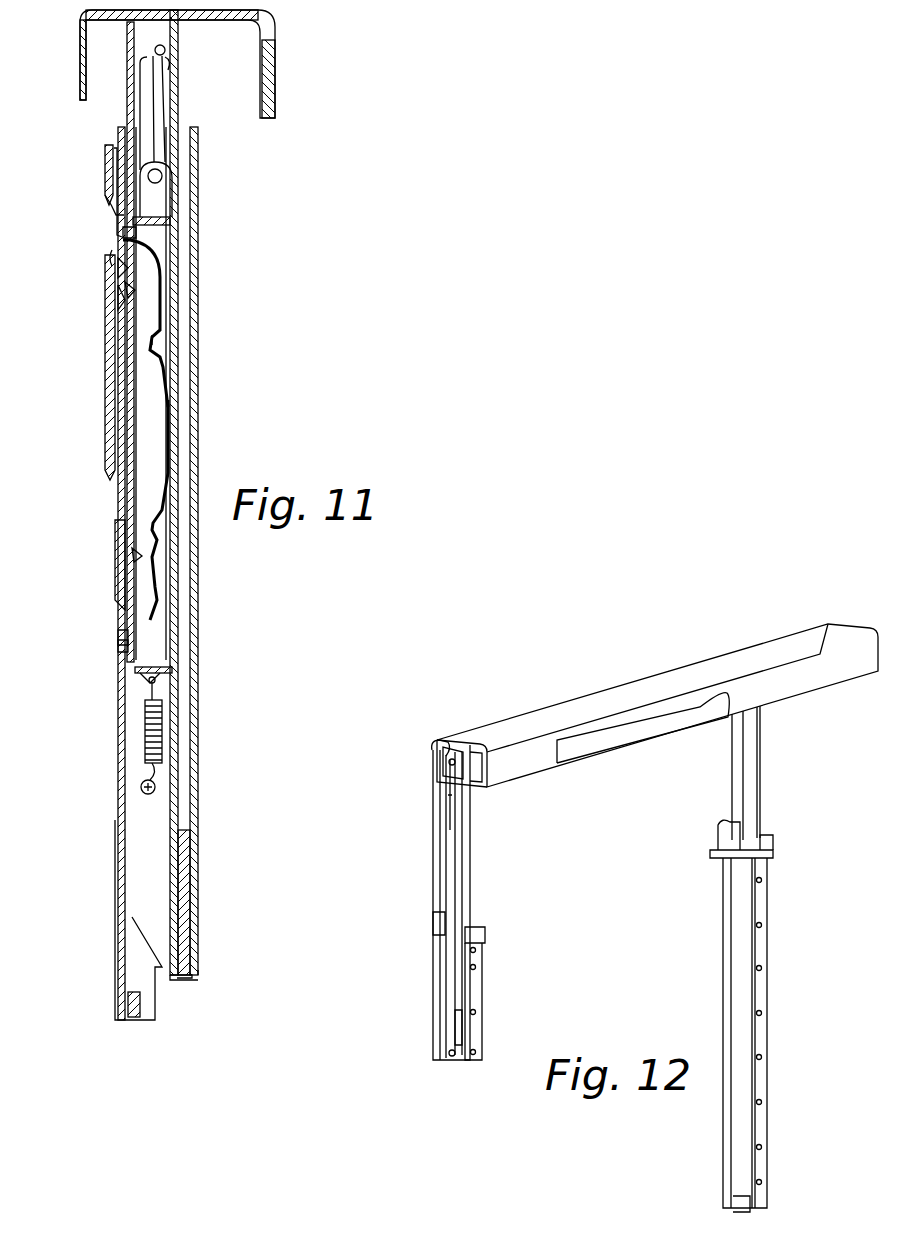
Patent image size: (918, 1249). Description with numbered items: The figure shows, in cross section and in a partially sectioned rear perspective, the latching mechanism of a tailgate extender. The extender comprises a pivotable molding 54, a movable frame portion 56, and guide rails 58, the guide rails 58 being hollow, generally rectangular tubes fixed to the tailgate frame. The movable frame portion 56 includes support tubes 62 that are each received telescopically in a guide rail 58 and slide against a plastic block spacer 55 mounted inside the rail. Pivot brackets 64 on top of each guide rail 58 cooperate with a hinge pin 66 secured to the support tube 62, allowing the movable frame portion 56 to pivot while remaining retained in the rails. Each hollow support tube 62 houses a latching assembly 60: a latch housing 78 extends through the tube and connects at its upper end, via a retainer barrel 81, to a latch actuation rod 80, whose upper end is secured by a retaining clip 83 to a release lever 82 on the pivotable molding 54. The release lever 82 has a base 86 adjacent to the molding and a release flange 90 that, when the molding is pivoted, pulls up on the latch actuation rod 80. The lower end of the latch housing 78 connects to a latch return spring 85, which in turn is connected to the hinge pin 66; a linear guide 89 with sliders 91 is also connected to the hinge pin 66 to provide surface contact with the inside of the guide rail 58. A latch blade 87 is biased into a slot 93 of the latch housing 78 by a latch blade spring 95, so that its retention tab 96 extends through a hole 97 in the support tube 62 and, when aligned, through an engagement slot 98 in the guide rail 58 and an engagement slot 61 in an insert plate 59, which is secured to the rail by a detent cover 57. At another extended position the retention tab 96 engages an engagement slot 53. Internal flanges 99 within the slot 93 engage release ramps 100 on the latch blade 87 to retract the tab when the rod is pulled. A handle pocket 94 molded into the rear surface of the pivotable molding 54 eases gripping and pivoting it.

In FIG. 11, the engagement slot 53 is at (120, 500).
In FIG. 11, the pivotable molding 54 is at (275, 70).
In FIG. 12, the pivotable molding 54 is at (640, 682).
In FIG. 11, the block spacer 55 is at (112, 360).
In FIG. 12, the movable frame portion 56 is at (795, 720).
In FIG. 11, the detent cover 57 is at (106, 160).
In FIG. 11, the guide rail 58 is at (198, 278).
In FIG. 12, the guide rail 58 is at (768, 1018).
In FIG. 11, the insert plate 59 is at (123, 263).
In FIG. 12, the latching assembly 60 is at (430, 957).
In FIG. 11, the engagement slot 61 is at (112, 240).
In FIG. 11, the support tube 62 is at (178, 65).
In FIG. 12, the support tube 62 is at (760, 772).
In FIG. 12, the pivot bracket 64 is at (762, 822).
In FIG. 11, the hinge pin 66 is at (148, 790).
In FIG. 12, the hinge pin 66 is at (447, 1055).
In FIG. 11, the latch housing 78 is at (162, 172).
In FIG. 12, the latch housing 78 is at (443, 833).
In FIG. 11, the latch actuation rod 80 is at (138, 108).
In FIG. 12, the latch actuation rod 80 is at (447, 793).
In FIG. 11, the retainer barrel 81 is at (110, 198).
In FIG. 12, the release lever 82 is at (430, 752).
In FIG. 11, the retaining clip 83 is at (167, 52).
In FIG. 11, the latch return spring 85 is at (148, 733).
In FIG. 12, the latch return spring 85 is at (457, 1040).
In FIG. 11, the base 86 is at (128, 28).
In FIG. 11, the latch blade 87 is at (160, 312).
In FIG. 11, the linear guide 89 is at (205, 960).
In FIG. 11, the release flange 90 is at (155, 53).
In FIG. 12, the release flange 90 is at (443, 765).
In FIG. 11, the slider 91 is at (192, 830).
In FIG. 11, the slot 93 is at (165, 238).
In FIG. 12, the handle pocket 94 is at (558, 760).
In FIG. 11, the latch blade spring 95 is at (168, 370).
In FIG. 11, the retention tab 96 is at (112, 245).
In FIG. 11, the hole 97 is at (120, 640).
In FIG. 11, the engagement slot 98 is at (118, 615).
In FIG. 11, the internal flange 99 is at (125, 285).
In FIG. 11, the release ramp 100 is at (130, 298).